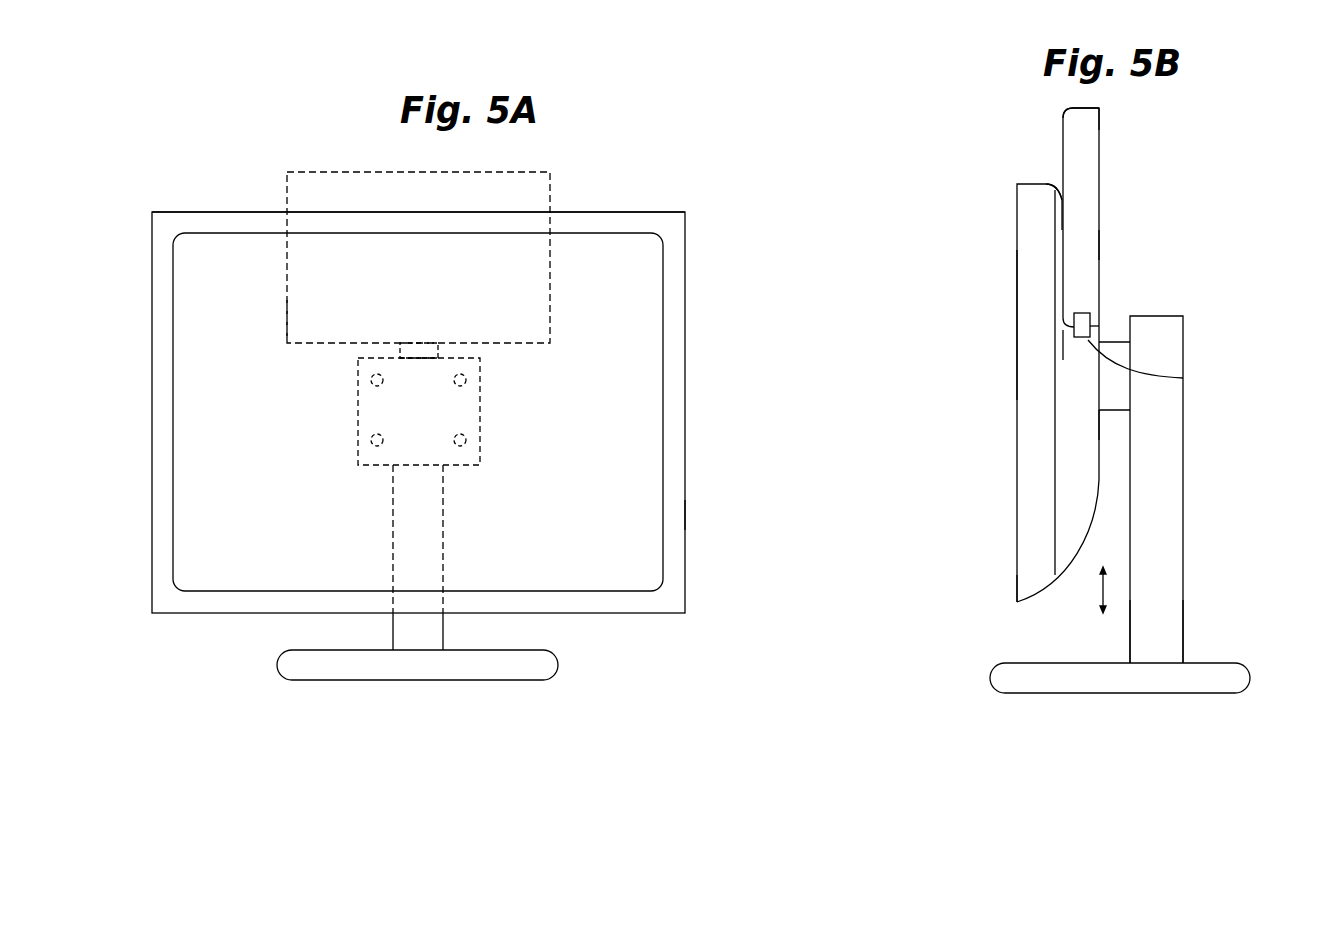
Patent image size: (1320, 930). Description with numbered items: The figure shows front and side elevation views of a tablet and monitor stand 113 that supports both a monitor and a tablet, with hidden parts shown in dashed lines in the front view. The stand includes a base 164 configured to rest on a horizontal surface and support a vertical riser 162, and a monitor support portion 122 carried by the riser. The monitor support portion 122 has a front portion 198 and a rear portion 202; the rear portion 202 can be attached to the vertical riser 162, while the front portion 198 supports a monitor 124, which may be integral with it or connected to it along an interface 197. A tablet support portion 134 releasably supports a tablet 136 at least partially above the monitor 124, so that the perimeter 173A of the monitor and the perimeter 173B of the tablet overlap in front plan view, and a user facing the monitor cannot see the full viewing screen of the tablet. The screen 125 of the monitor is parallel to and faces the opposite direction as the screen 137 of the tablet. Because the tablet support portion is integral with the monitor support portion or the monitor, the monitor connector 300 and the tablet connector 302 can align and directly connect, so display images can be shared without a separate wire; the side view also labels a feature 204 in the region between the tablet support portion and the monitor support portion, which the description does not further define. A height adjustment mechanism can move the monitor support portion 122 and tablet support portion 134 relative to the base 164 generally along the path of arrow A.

In FIG. 5A, the tablet and monitor stand 113 is at (630, 165).
In FIG. 5B, the tablet and monitor stand 113 is at (1180, 197).
In FIG. 5A, the monitor support portion 122 is at (480, 398).
In FIG. 5B, the monitor support portion 122 is at (1118, 315).
In FIG. 5A, the monitor 124 is at (152, 372).
In FIG. 5B, the monitor 124 is at (1016, 238).
In FIG. 5A, the screen of supported monitor 125 is at (590, 513).
In FIG. 5B, the screen of supported monitor 125 is at (1016, 332).
In FIG. 5B, the tablet support portion 134 is at (1056, 172).
In FIG. 5A, the tablet 136 is at (287, 182).
In FIG. 5B, the tablet 136 is at (1100, 170).
In FIG. 5B, the screen of supported tablet 137 is at (1100, 242).
In FIG. 5A, the vertical riser 162 is at (444, 625).
In FIG. 5B, the vertical riser 162 is at (1183, 615).
In FIG. 5A, the base 164 is at (318, 650).
In FIG. 5B, the base 164 is at (1048, 662).
In FIG. 5A, the perimeter of supported monitor 173A is at (686, 514).
In FIG. 5B, the perimeter of supported monitor 173A is at (1022, 203).
In FIG. 5A, the perimeter of supported tablet 173B is at (552, 305).
In FIG. 5B, the perimeter of supported tablet 173B is at (1077, 148).
In FIG. 5B, the interface 197 is at (1055, 487).
In FIG. 5B, the front portion of monitor support portion 198 is at (1075, 425).
In FIG. 5B, the rear portion of monitor support portion 202 is at (1113, 427).
In FIG. 5B, the connector cavity 204 is at (1063, 348).
In FIG. 5A, the monitor connector 300 is at (430, 355).
In FIG. 5B, the monitor connector 300 is at (1183, 378).
In FIG. 5A, the tablet connector 302 is at (437, 343).
In FIG. 5B, the tablet connector 302 is at (1092, 312).
In FIG. 5B, the arrow A is at (1112, 584).